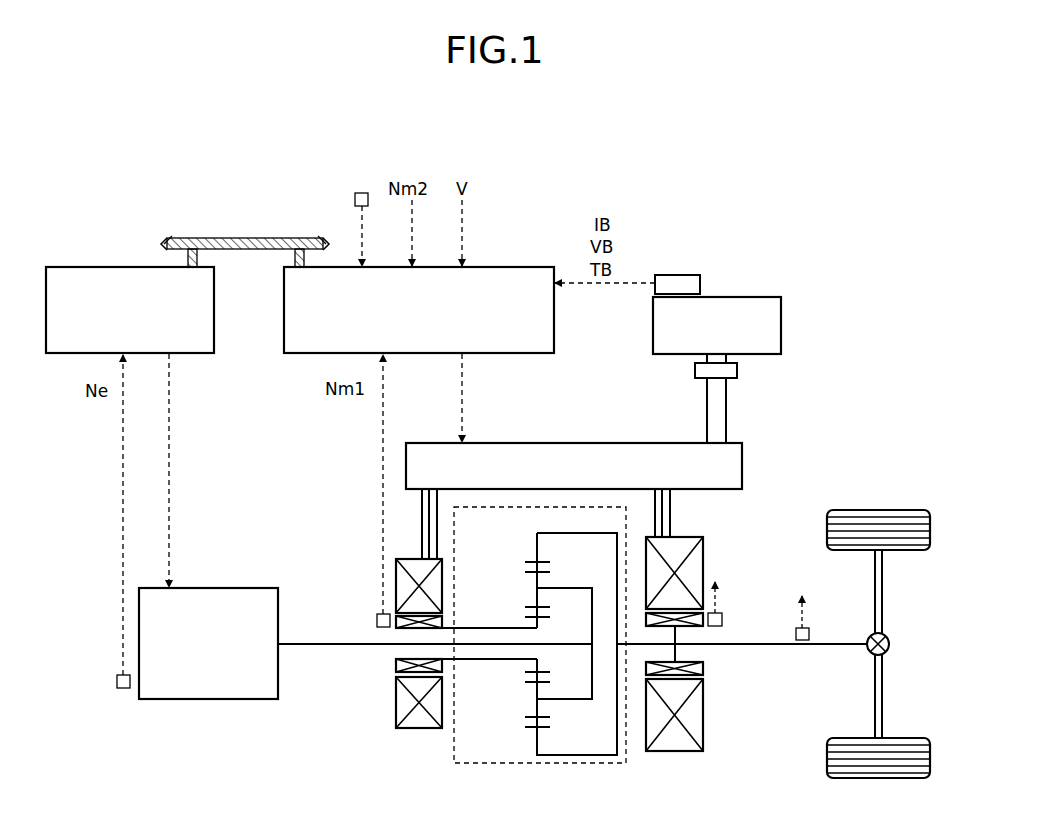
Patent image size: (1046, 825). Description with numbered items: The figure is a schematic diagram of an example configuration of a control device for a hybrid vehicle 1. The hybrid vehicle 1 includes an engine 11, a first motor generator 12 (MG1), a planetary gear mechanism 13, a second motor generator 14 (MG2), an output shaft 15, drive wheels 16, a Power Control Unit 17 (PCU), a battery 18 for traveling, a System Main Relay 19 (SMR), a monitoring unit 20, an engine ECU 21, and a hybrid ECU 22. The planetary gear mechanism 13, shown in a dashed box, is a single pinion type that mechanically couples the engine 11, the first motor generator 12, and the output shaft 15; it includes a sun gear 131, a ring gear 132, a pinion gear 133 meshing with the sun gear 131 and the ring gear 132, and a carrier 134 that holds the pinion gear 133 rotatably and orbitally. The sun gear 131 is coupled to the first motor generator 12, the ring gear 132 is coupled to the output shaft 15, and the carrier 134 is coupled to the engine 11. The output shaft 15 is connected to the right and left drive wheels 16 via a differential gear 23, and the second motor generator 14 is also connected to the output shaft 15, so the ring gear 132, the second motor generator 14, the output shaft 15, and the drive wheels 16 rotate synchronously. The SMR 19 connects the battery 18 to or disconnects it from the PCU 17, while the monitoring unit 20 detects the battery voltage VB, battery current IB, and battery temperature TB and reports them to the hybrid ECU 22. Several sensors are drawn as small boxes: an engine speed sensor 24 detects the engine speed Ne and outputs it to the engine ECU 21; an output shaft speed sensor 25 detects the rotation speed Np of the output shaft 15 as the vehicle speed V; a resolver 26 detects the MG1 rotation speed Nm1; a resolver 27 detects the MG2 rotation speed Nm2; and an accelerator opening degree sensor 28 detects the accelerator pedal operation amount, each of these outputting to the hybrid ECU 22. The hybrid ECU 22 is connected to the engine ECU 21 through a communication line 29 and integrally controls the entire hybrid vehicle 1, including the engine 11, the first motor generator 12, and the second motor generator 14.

The hybrid vehicle 1 is at (875, 184).
The engine 11 is at (242, 700).
The first motor generator 12 is at (418, 730).
The planetary gear mechanism 13 is at (534, 661).
The sun gear 131 is at (526, 616).
The ring gear 132 is at (528, 560).
The pinion gear 133 is at (526, 573).
The carrier 134 is at (572, 587).
The second motor generator 14 is at (679, 753).
The output shaft 15 is at (776, 647).
The drive wheels 16 is at (885, 506).
The Power Control Unit 17 is at (742, 466).
The battery 18 is at (781, 325).
The System Main Relay 19 is at (737, 370).
The monitoring unit 20 is at (700, 284).
The engine ECU 21 is at (98, 264).
The hybrid ECU 22 is at (527, 264).
The differential gear 23 is at (889, 644).
The engine speed sensor 24 is at (124, 689).
The output shaft speed sensor 25 is at (809, 632).
The resolver 26 is at (377, 618).
The resolver 27 is at (722, 618).
The accelerator opening degree sensor 28 is at (361, 192).
The communication line 29 is at (230, 236).